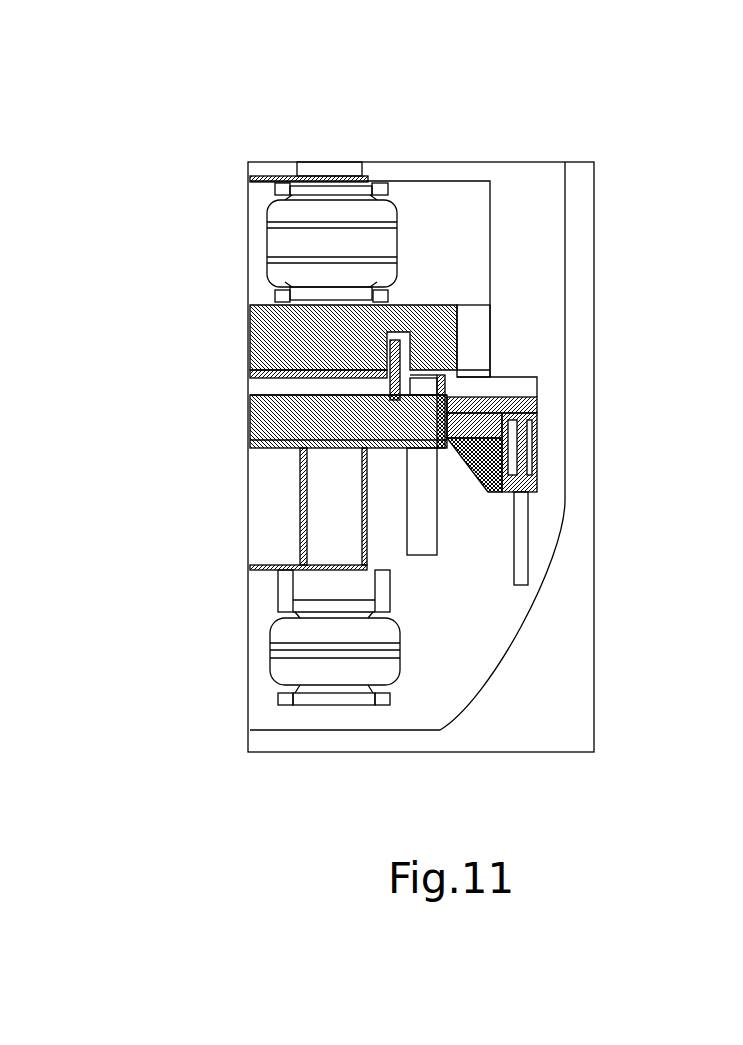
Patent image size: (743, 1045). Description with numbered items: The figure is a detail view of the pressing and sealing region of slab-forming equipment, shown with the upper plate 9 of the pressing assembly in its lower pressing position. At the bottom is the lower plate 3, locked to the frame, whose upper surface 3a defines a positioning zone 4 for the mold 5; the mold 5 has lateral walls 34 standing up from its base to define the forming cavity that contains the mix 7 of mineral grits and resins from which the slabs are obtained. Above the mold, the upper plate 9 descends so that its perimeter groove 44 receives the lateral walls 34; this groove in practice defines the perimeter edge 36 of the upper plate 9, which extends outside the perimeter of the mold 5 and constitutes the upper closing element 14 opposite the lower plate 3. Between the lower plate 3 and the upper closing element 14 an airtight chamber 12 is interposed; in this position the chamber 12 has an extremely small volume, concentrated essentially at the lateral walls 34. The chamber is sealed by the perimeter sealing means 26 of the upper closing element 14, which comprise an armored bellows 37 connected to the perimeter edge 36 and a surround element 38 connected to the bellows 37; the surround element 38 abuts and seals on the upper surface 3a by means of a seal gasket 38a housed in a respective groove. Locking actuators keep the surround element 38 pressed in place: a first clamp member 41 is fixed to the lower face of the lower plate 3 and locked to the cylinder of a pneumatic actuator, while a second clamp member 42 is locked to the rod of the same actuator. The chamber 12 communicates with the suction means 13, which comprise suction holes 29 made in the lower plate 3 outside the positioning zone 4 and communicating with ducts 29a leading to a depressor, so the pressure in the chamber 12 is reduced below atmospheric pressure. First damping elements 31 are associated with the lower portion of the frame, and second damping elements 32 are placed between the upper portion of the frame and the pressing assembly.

The lower plate 3 is at (535, 425).
The upper surface 3a is at (345, 398).
The positioning zone 4 is at (292, 398).
The mold 5 is at (209, 404).
The mix 7 is at (363, 386).
The upper plate 9 is at (268, 334).
The airtight chamber 12 is at (418, 362).
The suction means 13 is at (435, 573).
The upper closing element 14 is at (470, 352).
The perimeter sealing means 26 is at (478, 362).
The suction holes 29 is at (300, 443).
The ducts 29a is at (440, 548).
The first damping elements 31 is at (287, 655).
The second damping elements 32 is at (287, 240).
The lateral walls 34 is at (478, 372).
The perimeter edge 36 is at (454, 340).
The armored bellows 37 is at (436, 395).
The surround element 38 is at (470, 380).
The seal gasket 38a is at (452, 460).
The first clamp member 41 is at (474, 485).
The second clamp member 42 is at (512, 392).
The perimeter groove 44 is at (401, 343).